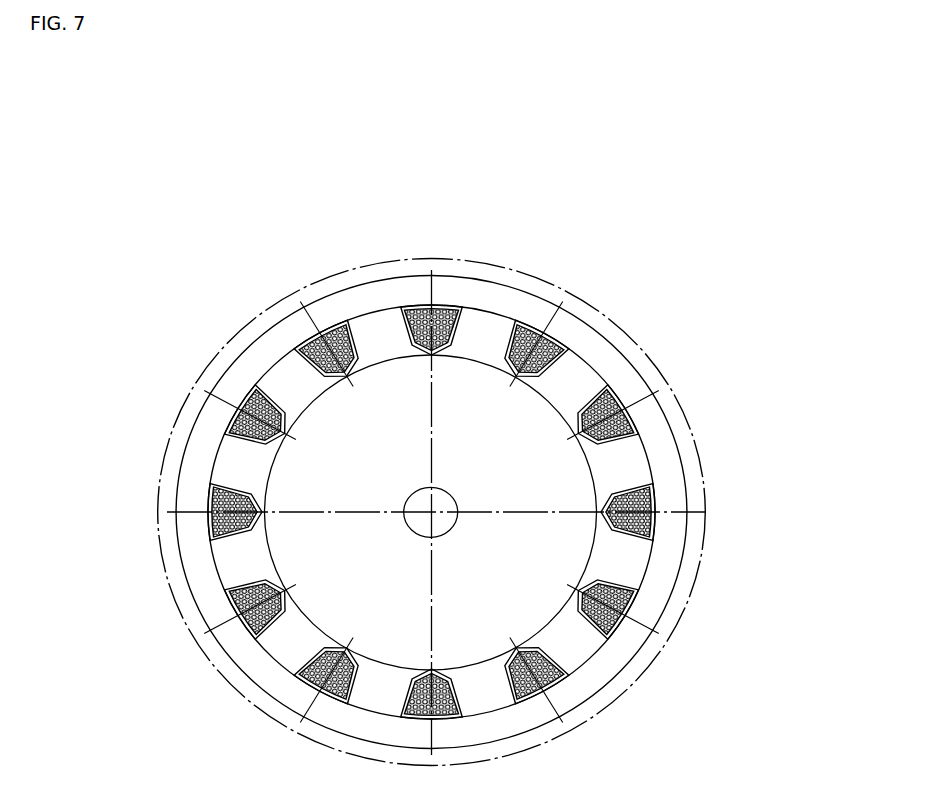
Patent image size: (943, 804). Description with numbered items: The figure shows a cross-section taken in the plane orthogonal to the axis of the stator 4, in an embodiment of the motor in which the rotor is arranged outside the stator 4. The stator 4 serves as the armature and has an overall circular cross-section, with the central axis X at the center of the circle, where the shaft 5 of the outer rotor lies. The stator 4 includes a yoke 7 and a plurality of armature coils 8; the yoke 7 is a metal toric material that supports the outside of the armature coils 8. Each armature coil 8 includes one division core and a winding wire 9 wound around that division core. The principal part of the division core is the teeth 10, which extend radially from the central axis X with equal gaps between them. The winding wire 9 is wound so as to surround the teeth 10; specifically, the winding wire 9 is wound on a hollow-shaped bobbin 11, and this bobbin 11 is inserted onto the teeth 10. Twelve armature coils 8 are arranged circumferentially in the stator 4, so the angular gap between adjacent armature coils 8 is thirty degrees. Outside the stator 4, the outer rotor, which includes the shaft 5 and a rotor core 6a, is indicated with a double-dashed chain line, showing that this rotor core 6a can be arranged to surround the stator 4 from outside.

The stator 4 is at (578, 468).
The shaft 5 is at (407, 528).
The rotor core 6a is at (177, 420).
The yoke 7 is at (265, 348).
The armature coil 8 is at (380, 305).
The winding wire 9 is at (421, 305).
The teeth 10 is at (372, 348).
The bobbin 11 is at (337, 322).
The central axis X is at (432, 512).